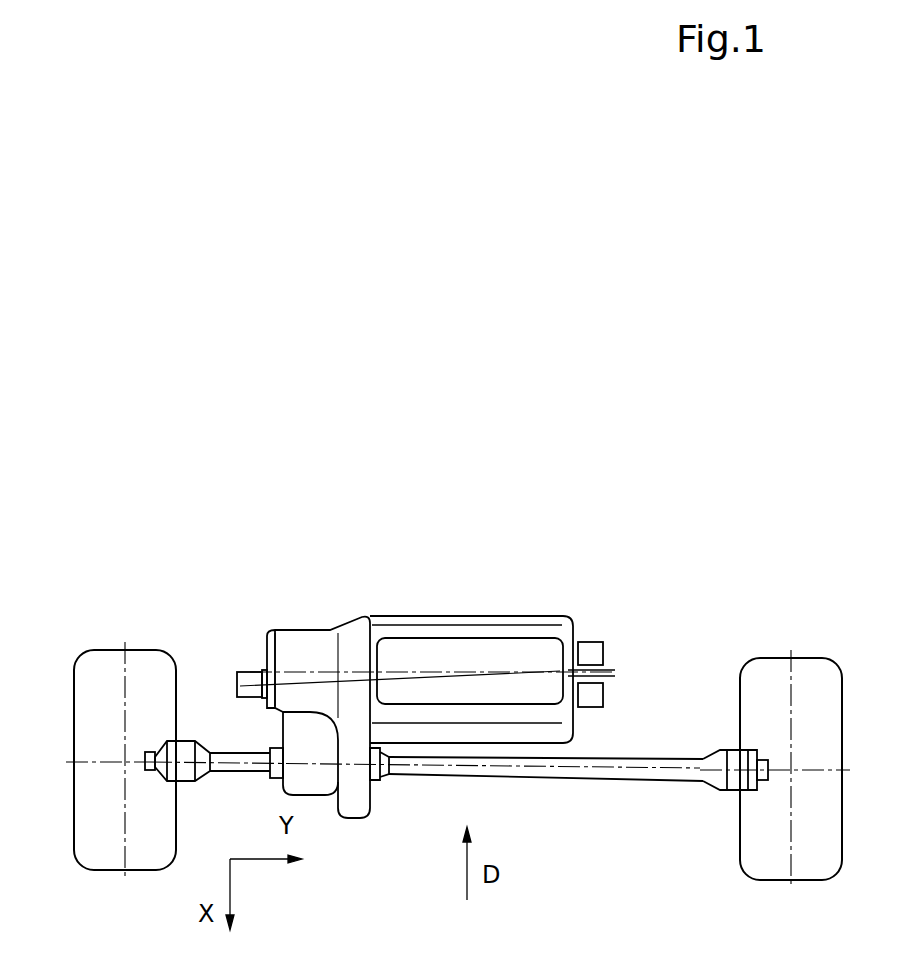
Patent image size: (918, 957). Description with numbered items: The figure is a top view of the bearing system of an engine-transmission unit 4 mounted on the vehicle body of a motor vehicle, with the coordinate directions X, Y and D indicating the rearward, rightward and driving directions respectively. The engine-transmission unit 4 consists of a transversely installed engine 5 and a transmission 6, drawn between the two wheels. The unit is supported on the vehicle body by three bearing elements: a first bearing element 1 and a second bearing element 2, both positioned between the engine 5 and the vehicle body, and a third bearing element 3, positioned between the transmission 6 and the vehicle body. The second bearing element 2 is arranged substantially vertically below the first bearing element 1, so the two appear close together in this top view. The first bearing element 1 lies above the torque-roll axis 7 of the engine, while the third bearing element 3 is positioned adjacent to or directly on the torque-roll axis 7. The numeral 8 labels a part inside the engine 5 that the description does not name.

The first bearing element 1 is at (603, 652).
The second bearing element 2 is at (603, 695).
The third bearing element 3 is at (247, 672).
The engine-transmission unit 4 is at (400, 616).
The engine 5 is at (515, 623).
The transmission 6 is at (287, 643).
The torque-roll axis 7 is at (288, 682).
The rotor 8 is at (400, 663).